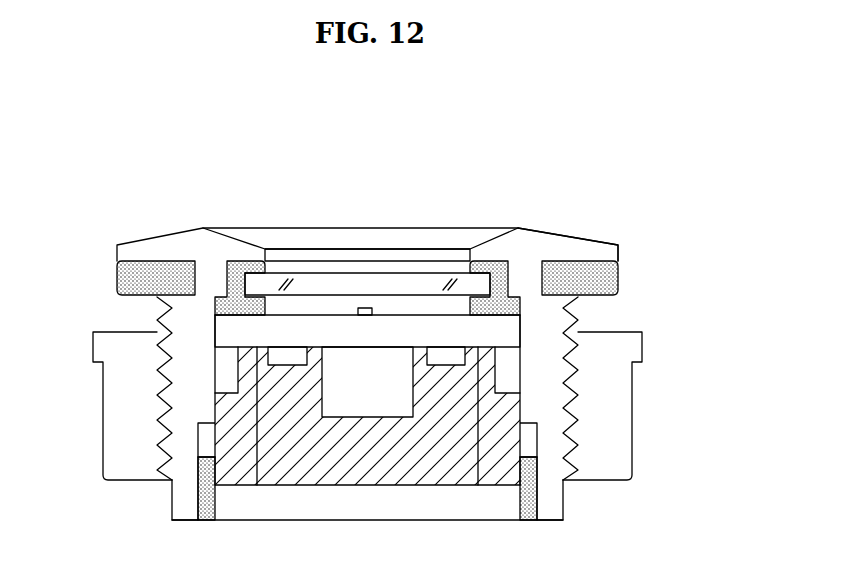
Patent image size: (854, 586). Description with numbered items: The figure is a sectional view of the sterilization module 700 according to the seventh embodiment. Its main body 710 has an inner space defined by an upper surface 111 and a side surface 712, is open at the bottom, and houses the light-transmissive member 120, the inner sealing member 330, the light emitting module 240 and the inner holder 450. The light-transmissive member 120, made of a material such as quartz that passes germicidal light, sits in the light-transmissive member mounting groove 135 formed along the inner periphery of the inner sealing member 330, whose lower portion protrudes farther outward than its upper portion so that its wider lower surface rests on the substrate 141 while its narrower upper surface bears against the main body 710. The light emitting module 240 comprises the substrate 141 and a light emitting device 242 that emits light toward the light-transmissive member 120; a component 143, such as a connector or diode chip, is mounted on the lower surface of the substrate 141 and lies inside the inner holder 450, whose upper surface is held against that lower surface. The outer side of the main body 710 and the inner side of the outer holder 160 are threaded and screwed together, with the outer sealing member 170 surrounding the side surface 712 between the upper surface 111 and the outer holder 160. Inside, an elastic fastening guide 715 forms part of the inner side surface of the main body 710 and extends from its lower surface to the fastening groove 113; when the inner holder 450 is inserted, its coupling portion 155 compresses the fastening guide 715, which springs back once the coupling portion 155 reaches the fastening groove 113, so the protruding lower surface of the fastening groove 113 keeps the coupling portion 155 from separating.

The sterilization module 700 is at (94, 147).
The light-transmissive member mounting groove 135 is at (243, 261).
The inner sealing member 330 is at (263, 266).
The light emitting module 240 is at (407, 181).
The substrate 141 is at (308, 337).
The light emitting device 242 is at (363, 307).
The component 143 is at (398, 360).
The light-transmissive member 120 is at (446, 289).
The main body 710 is at (585, 193).
The side surface 712 is at (535, 320).
The upper surface 111 is at (588, 257).
The outer sealing member 170 is at (618, 284).
The outer holder 160 is at (622, 420).
The fastening groove 113 is at (201, 442).
The fastening guide 715 is at (196, 488).
The coupling portion 155 is at (212, 443).
The inner holder 450 is at (312, 472).